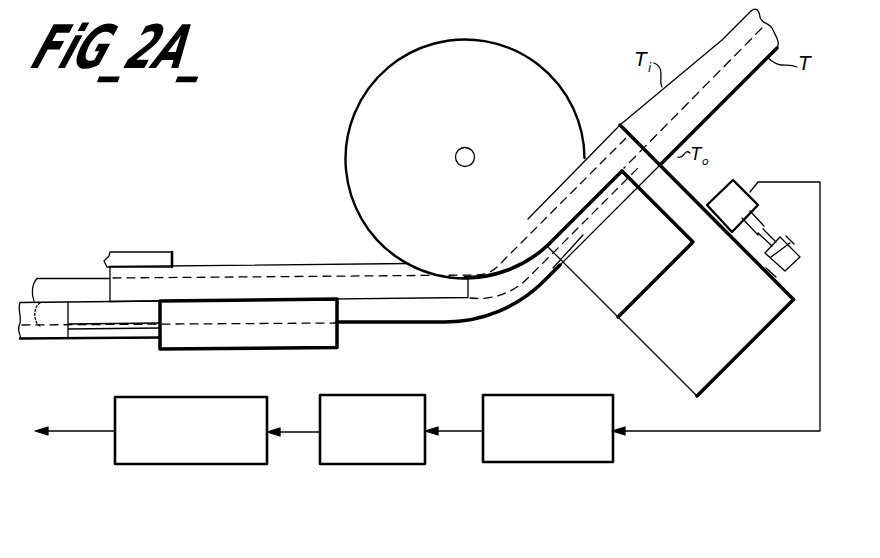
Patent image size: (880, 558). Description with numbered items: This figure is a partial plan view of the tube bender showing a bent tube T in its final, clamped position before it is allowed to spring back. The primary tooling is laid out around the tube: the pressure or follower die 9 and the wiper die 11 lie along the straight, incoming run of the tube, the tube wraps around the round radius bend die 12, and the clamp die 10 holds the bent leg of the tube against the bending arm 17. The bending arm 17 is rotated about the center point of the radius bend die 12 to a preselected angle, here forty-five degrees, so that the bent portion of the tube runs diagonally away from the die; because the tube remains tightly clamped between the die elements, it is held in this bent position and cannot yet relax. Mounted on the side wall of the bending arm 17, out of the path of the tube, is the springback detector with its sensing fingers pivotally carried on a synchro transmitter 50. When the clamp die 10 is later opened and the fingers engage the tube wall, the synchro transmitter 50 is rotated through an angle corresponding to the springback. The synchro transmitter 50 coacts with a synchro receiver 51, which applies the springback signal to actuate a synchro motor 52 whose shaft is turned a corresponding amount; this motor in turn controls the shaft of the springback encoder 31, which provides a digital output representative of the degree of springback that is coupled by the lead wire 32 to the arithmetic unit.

The pressure or follower die 9 is at (338, 331).
The clamp die 10 is at (559, 276).
The wiper die 11 is at (296, 265).
The radius bend die 12 is at (377, 78).
The bending arm 17 is at (634, 333).
The springback encoder 31 is at (182, 466).
The lead wire 32 is at (80, 431).
The synchro transmitter 50 is at (735, 186).
The synchro receiver 51 is at (507, 464).
The synchro motor 52 is at (390, 466).